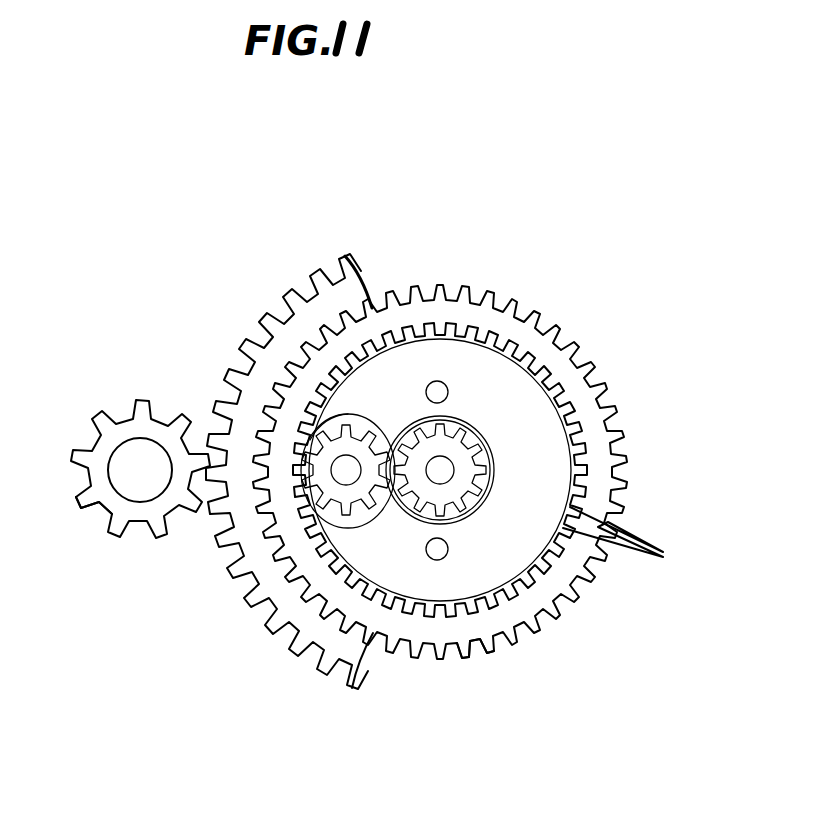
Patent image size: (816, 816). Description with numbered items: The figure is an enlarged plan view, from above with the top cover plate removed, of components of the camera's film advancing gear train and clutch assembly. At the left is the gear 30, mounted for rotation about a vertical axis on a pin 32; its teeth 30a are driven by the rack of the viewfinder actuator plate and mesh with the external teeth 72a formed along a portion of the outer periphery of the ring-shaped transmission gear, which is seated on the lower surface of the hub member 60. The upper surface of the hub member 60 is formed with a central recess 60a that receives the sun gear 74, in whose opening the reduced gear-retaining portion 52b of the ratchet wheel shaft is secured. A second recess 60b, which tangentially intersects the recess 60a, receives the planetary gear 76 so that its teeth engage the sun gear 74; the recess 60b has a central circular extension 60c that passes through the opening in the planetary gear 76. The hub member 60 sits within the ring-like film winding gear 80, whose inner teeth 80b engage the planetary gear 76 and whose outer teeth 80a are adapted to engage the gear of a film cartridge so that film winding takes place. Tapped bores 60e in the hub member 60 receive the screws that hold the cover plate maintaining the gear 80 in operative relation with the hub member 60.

The gear 30 is at (167, 527).
The teeth 30a is at (88, 510).
The pin 32 is at (118, 455).
The reduced gear-retaining portion 52b is at (445, 480).
The hub member 60 is at (535, 403).
The central recess 60a is at (493, 481).
The second recess 60b is at (368, 515).
The central circular extension 60c is at (363, 436).
The tapped bores 60e is at (441, 383).
The external teeth 72a is at (352, 688).
The sun gear 74 is at (467, 493).
The planetary gear 76 is at (349, 467).
The film winding gear 80 is at (538, 620).
The outer teeth 80a is at (462, 657).
The inner teeth 80b is at (629, 547).